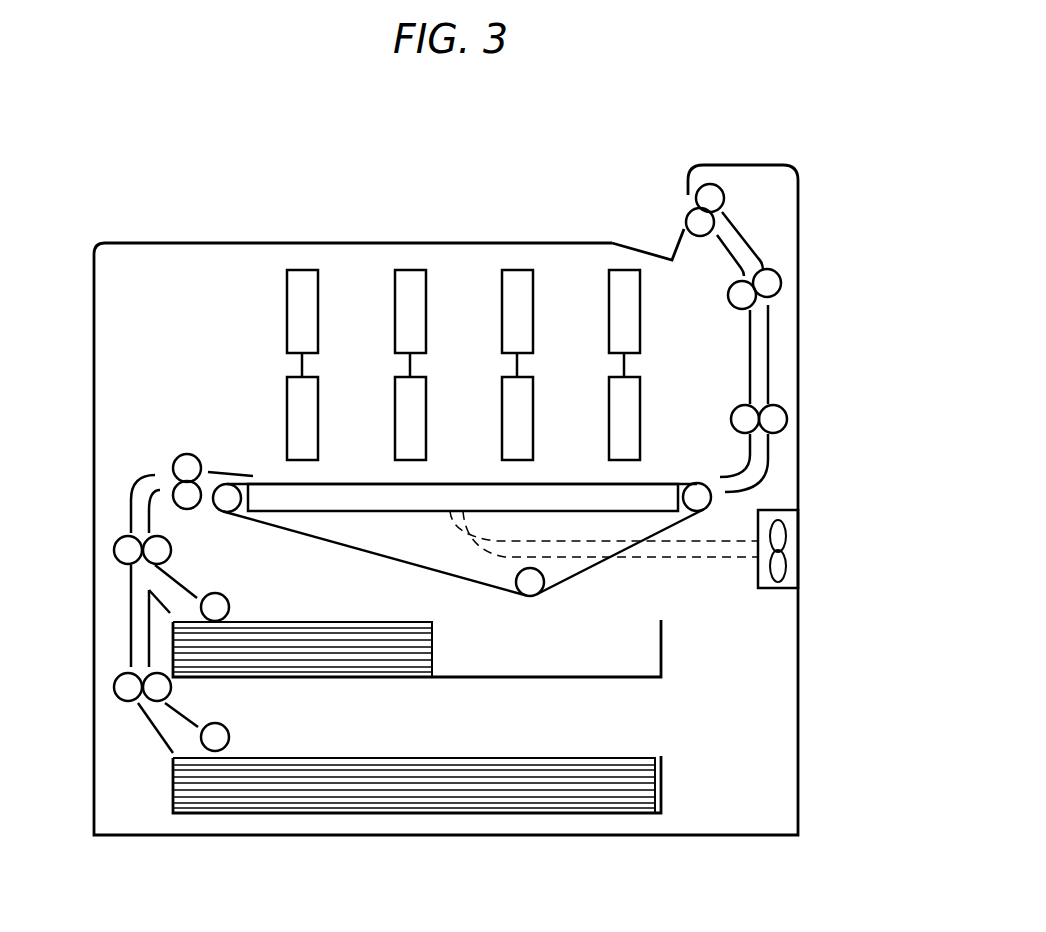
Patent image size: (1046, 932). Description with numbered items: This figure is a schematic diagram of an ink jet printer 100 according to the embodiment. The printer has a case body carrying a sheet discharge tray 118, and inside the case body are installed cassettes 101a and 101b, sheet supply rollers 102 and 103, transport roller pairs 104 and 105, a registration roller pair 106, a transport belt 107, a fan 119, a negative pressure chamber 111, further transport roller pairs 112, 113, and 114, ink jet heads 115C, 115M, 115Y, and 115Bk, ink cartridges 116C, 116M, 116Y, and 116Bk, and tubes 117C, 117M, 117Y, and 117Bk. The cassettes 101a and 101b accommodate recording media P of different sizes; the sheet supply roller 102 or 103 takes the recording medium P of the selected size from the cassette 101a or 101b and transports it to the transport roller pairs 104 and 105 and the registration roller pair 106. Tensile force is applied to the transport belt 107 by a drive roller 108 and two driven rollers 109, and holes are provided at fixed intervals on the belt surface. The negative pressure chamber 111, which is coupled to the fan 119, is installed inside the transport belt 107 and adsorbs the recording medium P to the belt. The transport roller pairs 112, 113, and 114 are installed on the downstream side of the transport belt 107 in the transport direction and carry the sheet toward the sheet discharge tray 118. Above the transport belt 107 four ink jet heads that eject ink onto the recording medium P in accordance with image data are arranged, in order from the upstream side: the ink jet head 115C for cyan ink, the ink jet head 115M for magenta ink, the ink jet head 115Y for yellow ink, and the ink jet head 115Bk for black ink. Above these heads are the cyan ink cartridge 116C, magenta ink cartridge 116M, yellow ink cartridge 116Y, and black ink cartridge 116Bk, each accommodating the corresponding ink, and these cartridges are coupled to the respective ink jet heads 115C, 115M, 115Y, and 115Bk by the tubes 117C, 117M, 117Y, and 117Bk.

The ink jet printer 100 is at (812, 120).
The cassette 101a is at (661, 788).
The cassette 101b is at (661, 647).
The sheet supply roller 102 is at (230, 604).
The sheet supply roller 103 is at (230, 734).
The transport roller pair 104 is at (114, 549).
The transport roller pair 105 is at (114, 690).
The registration roller pair 106 is at (178, 462).
The transport belt 107 is at (390, 565).
The drive roller 108 is at (702, 505).
The driven rollers 109 is at (225, 502).
The negative pressure chamber 111 is at (427, 513).
The transport roller pair 112 is at (787, 415).
The transport roller pair 113 is at (781, 277).
The transport roller pair 114 is at (725, 193).
The ink jet head 115C is at (287, 421).
The ink jet head 115M is at (395, 421).
The ink jet head 115Y is at (502, 421).
The ink jet head 115Bk is at (641, 444).
The ink cartridge 116C is at (302, 268).
The ink cartridge 116M is at (410, 268).
The ink cartridge 116Y is at (517, 268).
The ink cartridge 116Bk is at (622, 268).
The tube 117C is at (300, 367).
The tube 117M is at (408, 367).
The tube 117Y is at (515, 367).
The tube 117Bk is at (642, 366).
The sheet discharge tray 118 is at (664, 250).
The fan 119 is at (790, 548).
The recording medium P is at (387, 677).